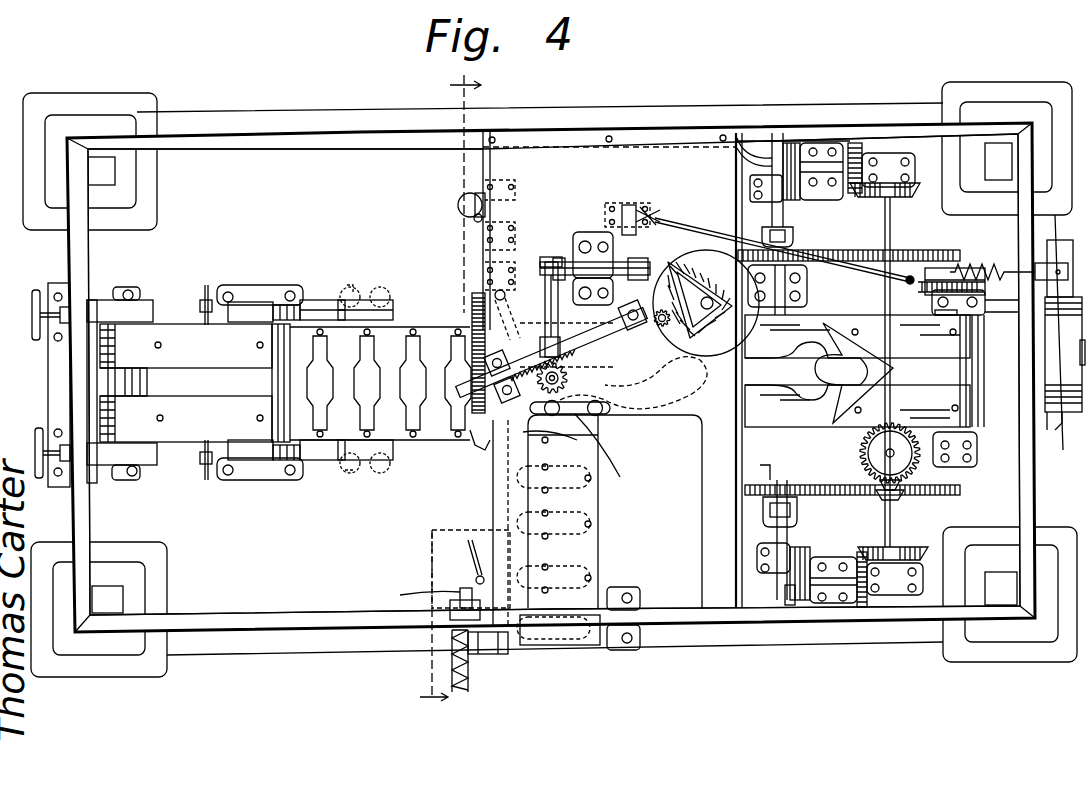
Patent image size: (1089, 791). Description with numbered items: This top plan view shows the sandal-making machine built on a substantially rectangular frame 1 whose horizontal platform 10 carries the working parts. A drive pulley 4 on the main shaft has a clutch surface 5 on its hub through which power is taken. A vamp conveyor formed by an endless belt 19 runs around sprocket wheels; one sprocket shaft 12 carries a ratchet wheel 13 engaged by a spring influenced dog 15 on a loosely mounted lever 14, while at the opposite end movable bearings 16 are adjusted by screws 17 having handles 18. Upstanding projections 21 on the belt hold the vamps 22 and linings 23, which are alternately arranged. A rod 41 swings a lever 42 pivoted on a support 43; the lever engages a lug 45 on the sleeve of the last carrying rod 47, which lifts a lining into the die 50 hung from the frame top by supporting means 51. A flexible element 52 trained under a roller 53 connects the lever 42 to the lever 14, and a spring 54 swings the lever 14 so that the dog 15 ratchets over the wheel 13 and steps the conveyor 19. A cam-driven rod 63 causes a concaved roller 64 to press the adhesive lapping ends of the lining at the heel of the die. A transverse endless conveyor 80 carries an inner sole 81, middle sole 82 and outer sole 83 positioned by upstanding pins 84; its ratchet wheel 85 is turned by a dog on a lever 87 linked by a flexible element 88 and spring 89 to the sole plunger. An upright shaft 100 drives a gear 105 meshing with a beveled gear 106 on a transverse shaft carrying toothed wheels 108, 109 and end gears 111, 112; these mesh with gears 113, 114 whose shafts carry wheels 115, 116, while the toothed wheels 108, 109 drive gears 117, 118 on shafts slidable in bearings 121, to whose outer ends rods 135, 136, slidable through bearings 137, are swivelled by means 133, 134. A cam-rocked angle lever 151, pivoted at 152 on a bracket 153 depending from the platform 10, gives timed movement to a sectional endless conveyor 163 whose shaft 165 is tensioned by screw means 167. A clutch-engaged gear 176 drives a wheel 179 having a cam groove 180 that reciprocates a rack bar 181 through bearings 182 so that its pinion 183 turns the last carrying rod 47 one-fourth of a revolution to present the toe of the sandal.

The frame 1 is at (745, 135).
The drive pulley 4 is at (1075, 420).
The clutch surface 5 is at (450, 392).
The horizontal platform 10 is at (835, 108).
The shaft 12 is at (958, 470).
The ratchet wheel 13 is at (1018, 316).
The lever 14 is at (940, 268).
The spring influenced dog 15 is at (920, 308).
The movable bearings 16 is at (128, 289).
The screws 17 is at (45, 450).
The handles 18 is at (40, 314).
The endless belt 19 is at (172, 330).
The upstanding projections 21 is at (696, 476).
The vamps 22 is at (870, 365).
The linings 23 is at (752, 400).
The rod 41 is at (634, 205).
The lever 42 is at (610, 240).
The support 43 is at (592, 262).
The lug 45 is at (545, 330).
The last carrying rod 47 is at (572, 378).
The die 50 is at (600, 430).
The supporting means 51 is at (482, 437).
The flexible element 52 is at (798, 255).
The roller 53 is at (660, 226).
The spring 54 is at (985, 266).
The rod 63 is at (460, 208).
The concaved roller 64 is at (474, 322).
The endless conveyor 80 is at (545, 505).
The inner sole 81 is at (580, 500).
The middle sole 82 is at (580, 460).
The outer sole 83 is at (600, 470).
The upstanding pins 84 is at (553, 516).
The ratchet wheel 85 is at (486, 656).
The lever 87 is at (372, 604).
The flexible element 88 is at (475, 570).
The spring 89 is at (450, 672).
The upright shaft 100 is at (888, 450).
The gear 105 is at (880, 480).
The beveled gear 106 is at (878, 497).
The toothed wheel 108 is at (892, 248).
The toothed wheel 109 is at (915, 498).
The gear 111 is at (915, 190).
The gear 112 is at (915, 553).
The gear 113 is at (855, 143).
The gear 114 is at (868, 610).
The wheel 115 is at (790, 140).
The wheel 116 is at (800, 605).
The gear 117 is at (765, 240).
The gear 118 is at (760, 510).
The bearings 121 is at (808, 290).
The swivel connection means 133 is at (787, 232).
The swivel connection means 134 is at (795, 527).
The rod 135 is at (748, 135).
The rod 136 is at (790, 600).
The bearings 137 is at (750, 175).
The angle rod or lever 151 is at (328, 300).
The pivot 152 is at (385, 289).
The bracket 153 is at (350, 287).
The sectional endless conveyor 163 is at (395, 338).
The shaft 165 is at (298, 300).
The screw means 167 is at (225, 295).
The gear 176 is at (768, 349).
The wheel 179 is at (710, 250).
The cam groove 180 is at (698, 308).
The rack bar 181 is at (655, 390).
The bearings 182 is at (668, 324).
The pinion 183 is at (560, 401).